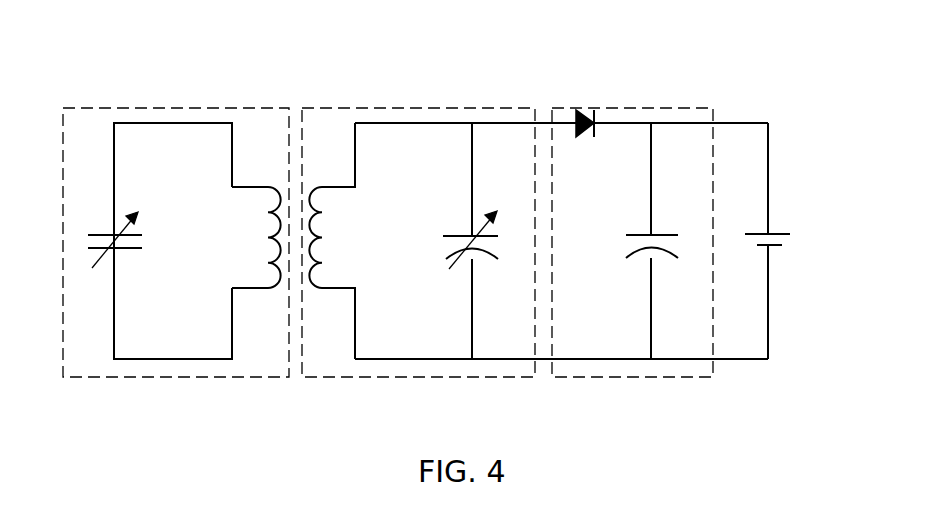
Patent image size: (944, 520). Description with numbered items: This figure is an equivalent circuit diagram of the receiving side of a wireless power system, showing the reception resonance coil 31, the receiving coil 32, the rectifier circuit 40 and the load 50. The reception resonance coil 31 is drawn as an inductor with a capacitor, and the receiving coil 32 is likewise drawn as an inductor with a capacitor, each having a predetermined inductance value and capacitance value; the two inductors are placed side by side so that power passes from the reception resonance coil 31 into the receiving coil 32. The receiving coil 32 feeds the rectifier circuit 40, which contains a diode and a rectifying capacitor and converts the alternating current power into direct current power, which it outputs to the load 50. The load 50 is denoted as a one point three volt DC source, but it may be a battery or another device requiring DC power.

The reception resonance coil 31 is at (234, 107).
The receiving coil 32 is at (385, 107).
The rectifier circuit 40 is at (657, 107).
The load 50 is at (777, 222).